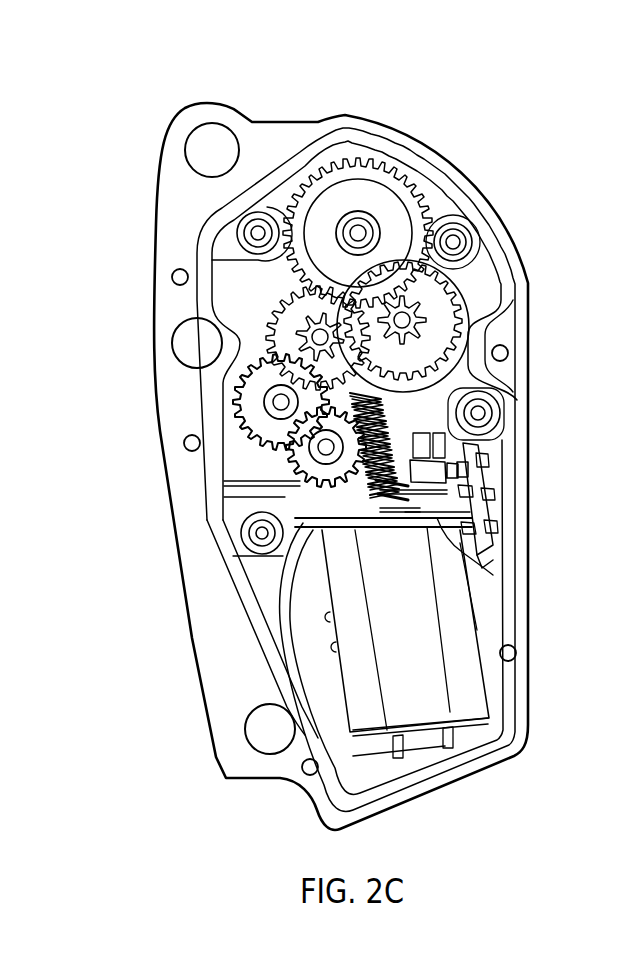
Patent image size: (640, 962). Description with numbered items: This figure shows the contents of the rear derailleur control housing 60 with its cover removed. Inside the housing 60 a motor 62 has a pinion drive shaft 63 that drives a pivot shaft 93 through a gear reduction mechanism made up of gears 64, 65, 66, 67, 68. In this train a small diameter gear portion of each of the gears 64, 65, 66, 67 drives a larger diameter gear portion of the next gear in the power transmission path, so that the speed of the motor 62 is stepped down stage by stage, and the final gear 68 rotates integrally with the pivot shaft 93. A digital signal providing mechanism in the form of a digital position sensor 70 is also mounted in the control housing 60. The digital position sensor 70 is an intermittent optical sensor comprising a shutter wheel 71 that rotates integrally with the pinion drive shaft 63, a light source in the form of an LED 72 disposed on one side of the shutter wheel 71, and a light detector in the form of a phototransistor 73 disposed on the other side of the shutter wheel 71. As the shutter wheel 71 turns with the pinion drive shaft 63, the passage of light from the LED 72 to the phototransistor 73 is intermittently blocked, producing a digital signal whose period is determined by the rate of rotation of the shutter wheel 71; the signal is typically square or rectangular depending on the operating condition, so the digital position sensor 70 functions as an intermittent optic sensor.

The rear derailleur control housing 60 is at (157, 393).
The motor 62 is at (428, 630).
The pinion drive shaft 63 is at (393, 411).
The gear 64 is at (300, 453).
The gear 65 is at (268, 412).
The gear 66 is at (300, 316).
The gear 67 is at (463, 294).
The gear 68 is at (346, 190).
The digital position sensor 70 is at (418, 522).
The shutter wheel 71 is at (447, 483).
The LED 72 is at (490, 450).
The phototransistor 73 is at (483, 555).
The pivot shaft 93 is at (359, 232).